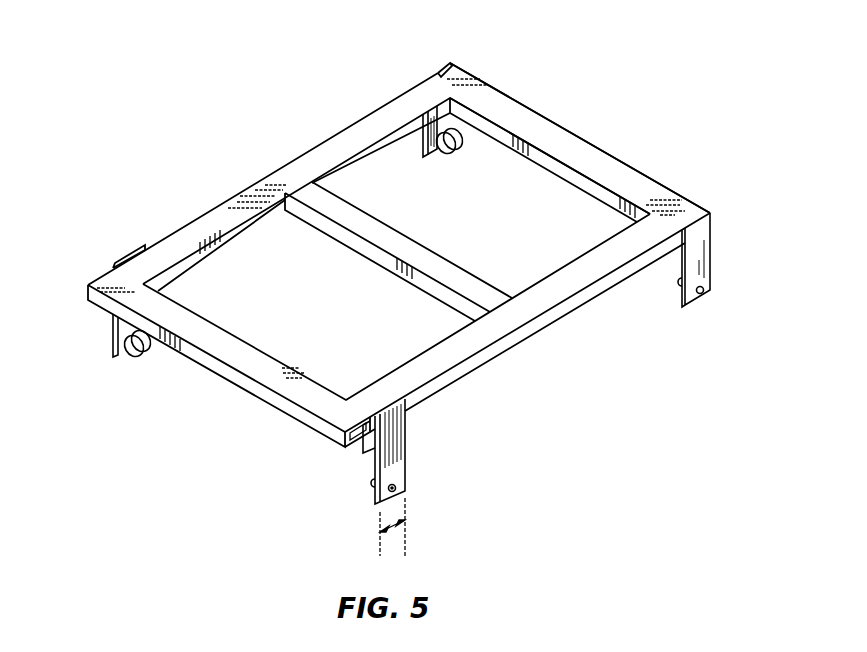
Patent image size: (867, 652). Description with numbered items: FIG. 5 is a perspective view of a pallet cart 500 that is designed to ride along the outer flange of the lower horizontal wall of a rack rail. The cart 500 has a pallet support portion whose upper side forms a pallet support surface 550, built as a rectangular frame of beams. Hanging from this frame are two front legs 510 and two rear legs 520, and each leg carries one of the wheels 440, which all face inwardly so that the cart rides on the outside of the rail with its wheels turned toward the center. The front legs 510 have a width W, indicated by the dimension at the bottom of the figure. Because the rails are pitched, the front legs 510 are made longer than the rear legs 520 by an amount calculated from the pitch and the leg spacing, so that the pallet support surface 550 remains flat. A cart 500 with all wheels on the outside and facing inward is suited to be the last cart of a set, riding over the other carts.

The cart 500 is at (525, 42).
The front legs 510 is at (113, 332).
The rear legs 520 is at (433, 133).
The support surface 550 is at (627, 178).
The wheels 440 is at (147, 350).
The width W is at (393, 529).